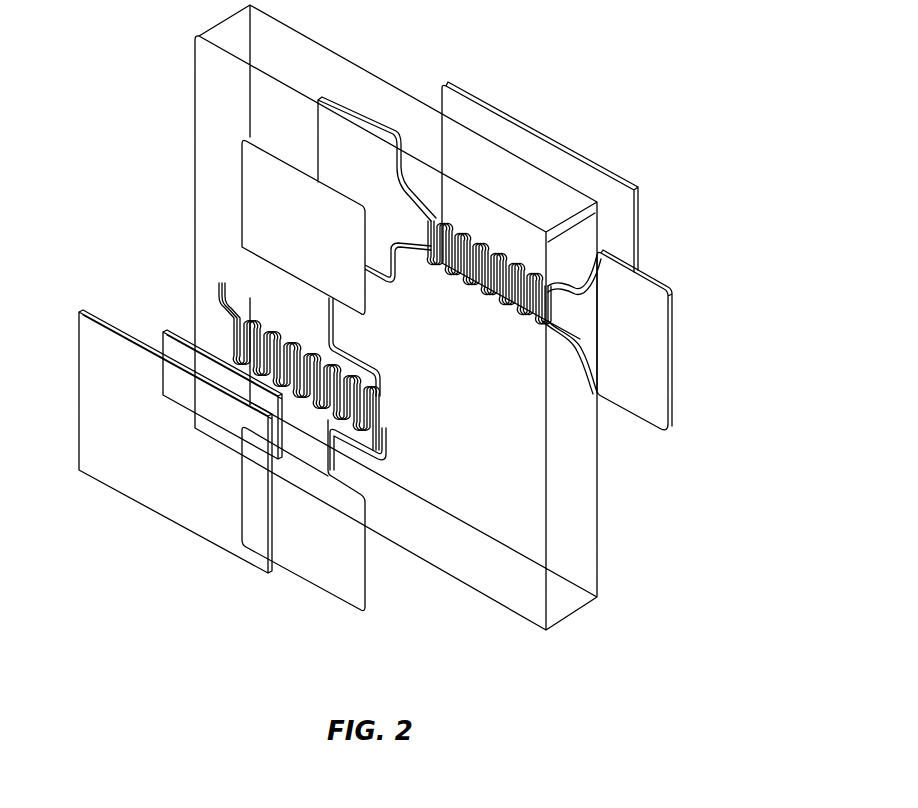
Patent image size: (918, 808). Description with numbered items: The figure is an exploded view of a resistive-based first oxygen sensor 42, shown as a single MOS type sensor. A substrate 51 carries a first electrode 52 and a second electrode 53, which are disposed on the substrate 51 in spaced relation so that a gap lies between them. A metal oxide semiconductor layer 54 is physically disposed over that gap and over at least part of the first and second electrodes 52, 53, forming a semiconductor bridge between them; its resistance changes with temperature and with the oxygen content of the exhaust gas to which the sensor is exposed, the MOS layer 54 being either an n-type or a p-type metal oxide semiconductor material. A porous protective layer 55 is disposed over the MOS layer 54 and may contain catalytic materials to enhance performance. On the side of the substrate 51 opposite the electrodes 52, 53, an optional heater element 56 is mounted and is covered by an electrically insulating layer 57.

The first oxygen sensor 42 is at (595, 143).
The substrate 51 is at (210, 68).
The first electrode 52 is at (265, 172).
The second electrode 53 is at (318, 560).
The metal oxide semiconductor layer 54 is at (165, 345).
The porous protective layer 55 is at (95, 342).
The heater element 56 is at (640, 300).
The electrically insulating layer 57 is at (475, 118).